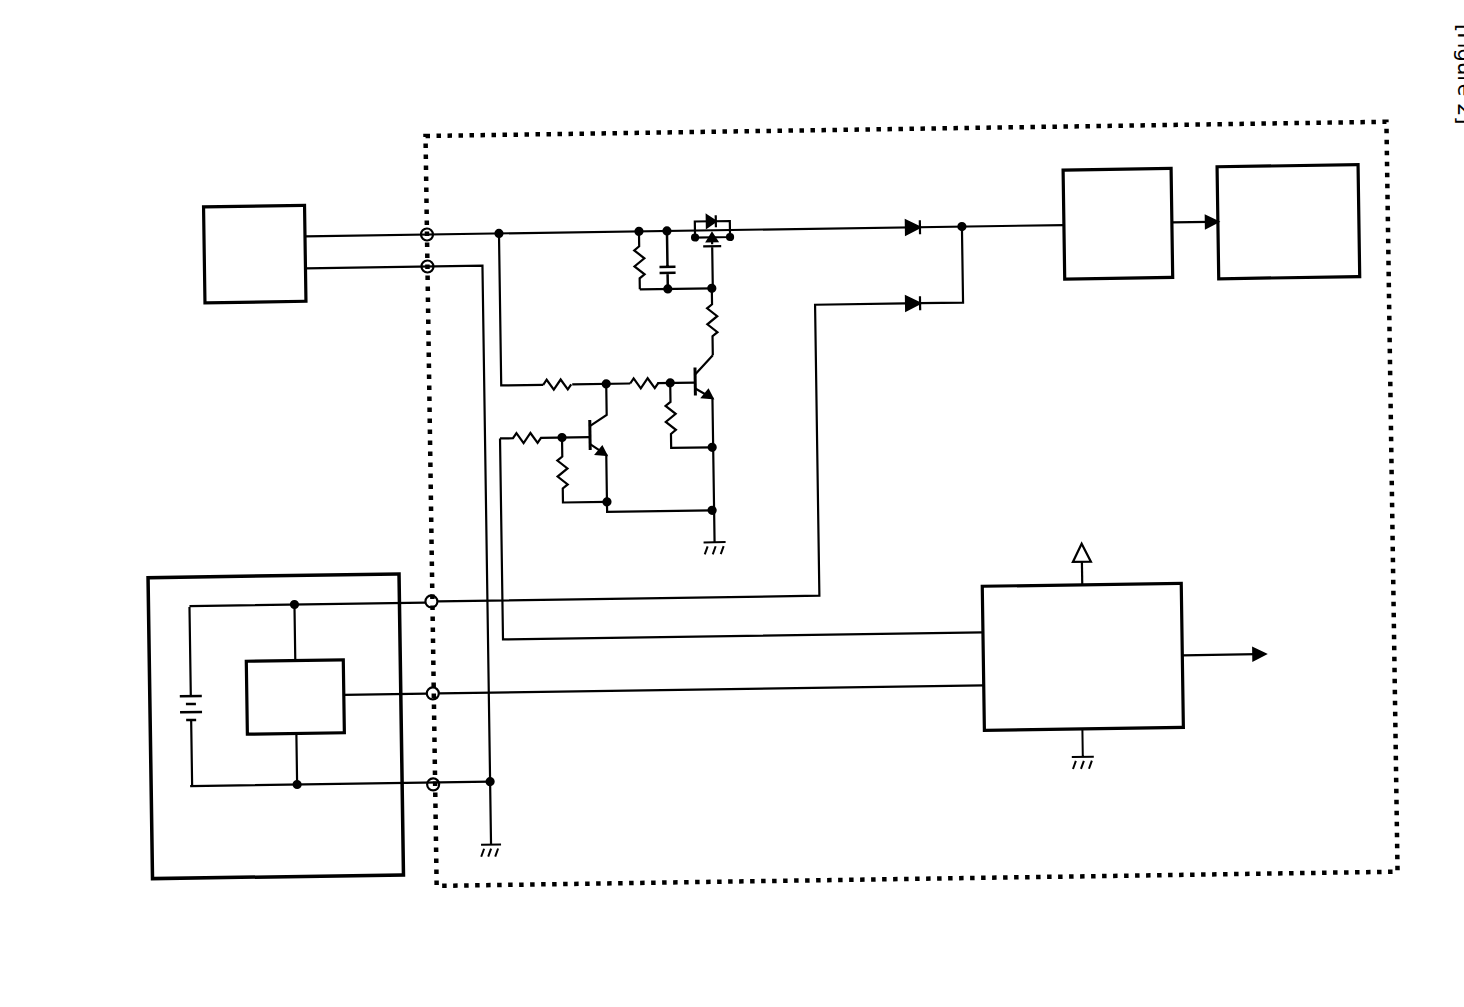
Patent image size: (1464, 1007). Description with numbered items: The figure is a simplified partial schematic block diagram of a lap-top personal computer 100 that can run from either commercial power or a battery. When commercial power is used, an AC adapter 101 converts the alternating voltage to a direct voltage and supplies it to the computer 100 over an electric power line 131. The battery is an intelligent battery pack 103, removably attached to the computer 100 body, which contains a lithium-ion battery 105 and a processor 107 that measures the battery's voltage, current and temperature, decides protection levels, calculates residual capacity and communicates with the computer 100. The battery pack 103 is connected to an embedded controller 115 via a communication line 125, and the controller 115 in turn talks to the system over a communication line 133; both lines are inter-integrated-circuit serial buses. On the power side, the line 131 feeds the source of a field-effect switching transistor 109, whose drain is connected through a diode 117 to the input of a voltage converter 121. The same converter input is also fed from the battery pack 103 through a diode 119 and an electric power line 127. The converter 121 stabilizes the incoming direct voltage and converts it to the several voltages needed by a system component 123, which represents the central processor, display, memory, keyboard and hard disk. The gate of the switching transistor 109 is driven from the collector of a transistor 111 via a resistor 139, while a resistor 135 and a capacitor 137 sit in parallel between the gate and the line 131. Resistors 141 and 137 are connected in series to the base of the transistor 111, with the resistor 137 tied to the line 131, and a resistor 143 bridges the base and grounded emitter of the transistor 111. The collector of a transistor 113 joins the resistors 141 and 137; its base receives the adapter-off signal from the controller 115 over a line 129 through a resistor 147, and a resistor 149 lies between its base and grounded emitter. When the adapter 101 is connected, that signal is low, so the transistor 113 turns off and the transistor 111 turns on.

The PC 100 is at (1197, 113).
The AC adapter 101 is at (257, 199).
The intelligent battery pack 103 is at (231, 569).
The Li-ion battery 105 is at (204, 720).
The CPU 107 is at (256, 654).
The FET 109 is at (741, 219).
The transistor 111 is at (722, 401).
The transistor 113 is at (616, 456).
The embedded controller 115 is at (1133, 590).
The diode 117 is at (927, 215).
The diode 119 is at (926, 316).
The DC/DC converter 121 is at (1118, 223).
The system component 123 is at (1288, 222).
The communication line 125 is at (886, 687).
The electric power line 127 is at (822, 552).
The line 129 is at (886, 634).
The electric power line 131 is at (557, 228).
The communication line 133 is at (1206, 663).
The resistor 135 is at (636, 272).
The capacitor / resistor 137 is at (668, 258).
The resistor 139 is at (722, 330).
The resistor 141 is at (644, 378).
The resistor 143 is at (667, 419).
The resistor 147 is at (528, 431).
The resistor 149 is at (558, 478).